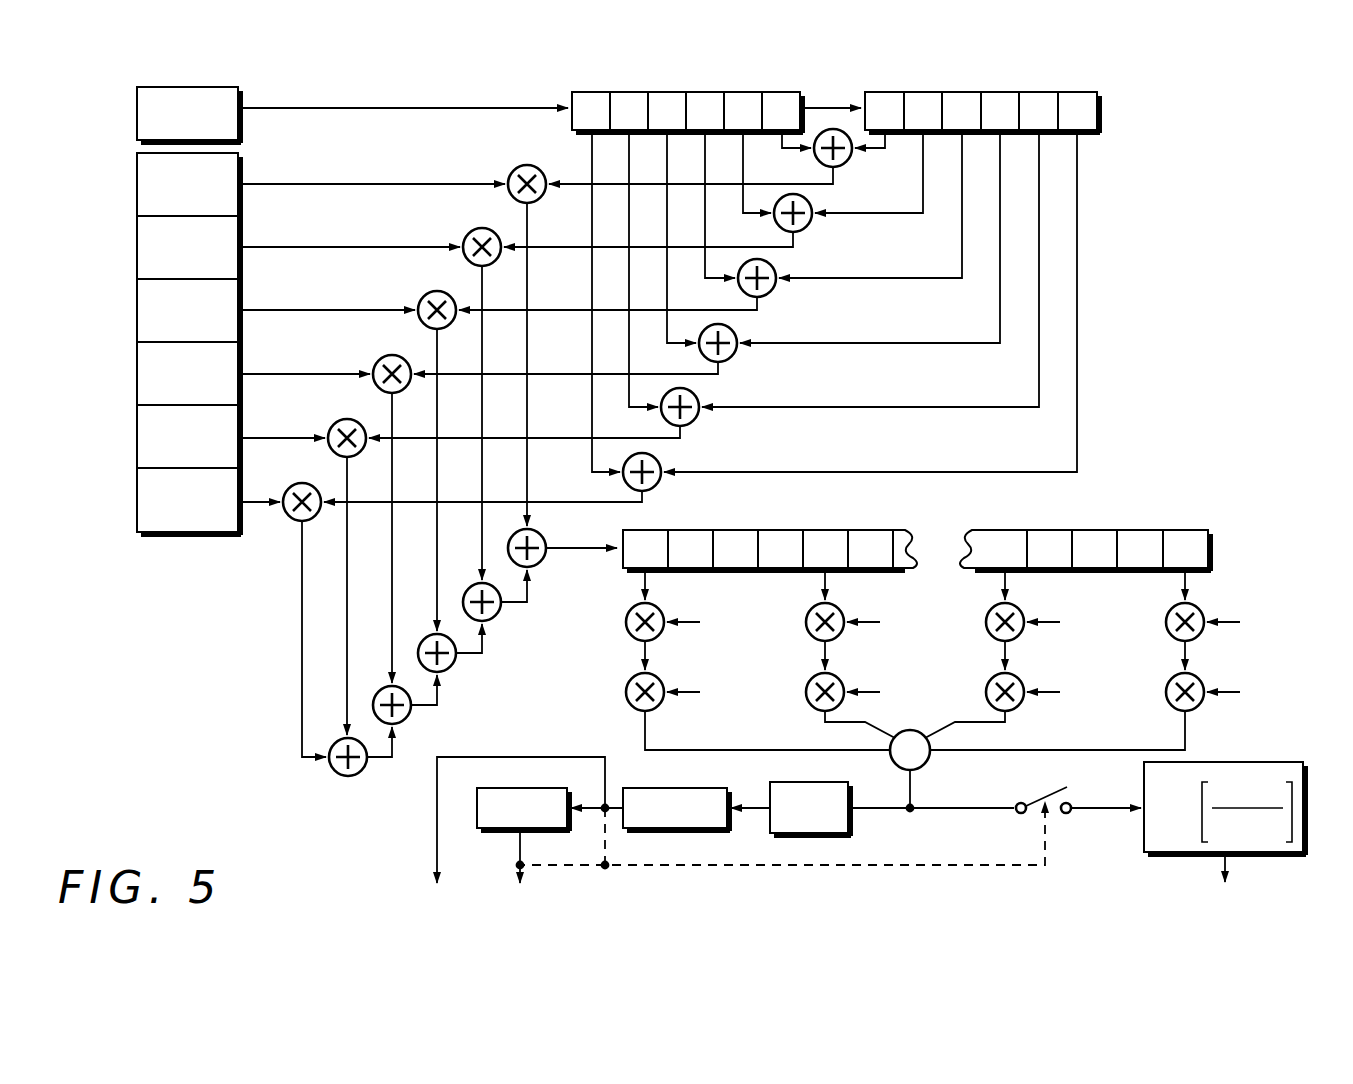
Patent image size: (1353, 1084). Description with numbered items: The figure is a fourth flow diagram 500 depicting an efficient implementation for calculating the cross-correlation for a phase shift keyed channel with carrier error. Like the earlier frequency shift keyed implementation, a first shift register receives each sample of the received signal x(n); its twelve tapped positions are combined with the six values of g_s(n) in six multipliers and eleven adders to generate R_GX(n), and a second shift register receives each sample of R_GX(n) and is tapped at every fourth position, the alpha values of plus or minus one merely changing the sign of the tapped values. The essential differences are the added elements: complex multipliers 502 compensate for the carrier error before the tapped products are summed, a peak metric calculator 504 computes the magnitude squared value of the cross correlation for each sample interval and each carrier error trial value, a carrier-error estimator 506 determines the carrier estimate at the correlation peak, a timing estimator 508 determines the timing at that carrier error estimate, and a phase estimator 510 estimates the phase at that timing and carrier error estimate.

The fourth flow diagram 500 is at (196, 827).
The complex multipliers 502 is at (1175, 678).
The peak metric calculator 504 is at (795, 782).
The carrier-error estimator 506 is at (663, 788).
The timing estimator 508 is at (515, 788).
The phase estimator 510 is at (1224, 762).